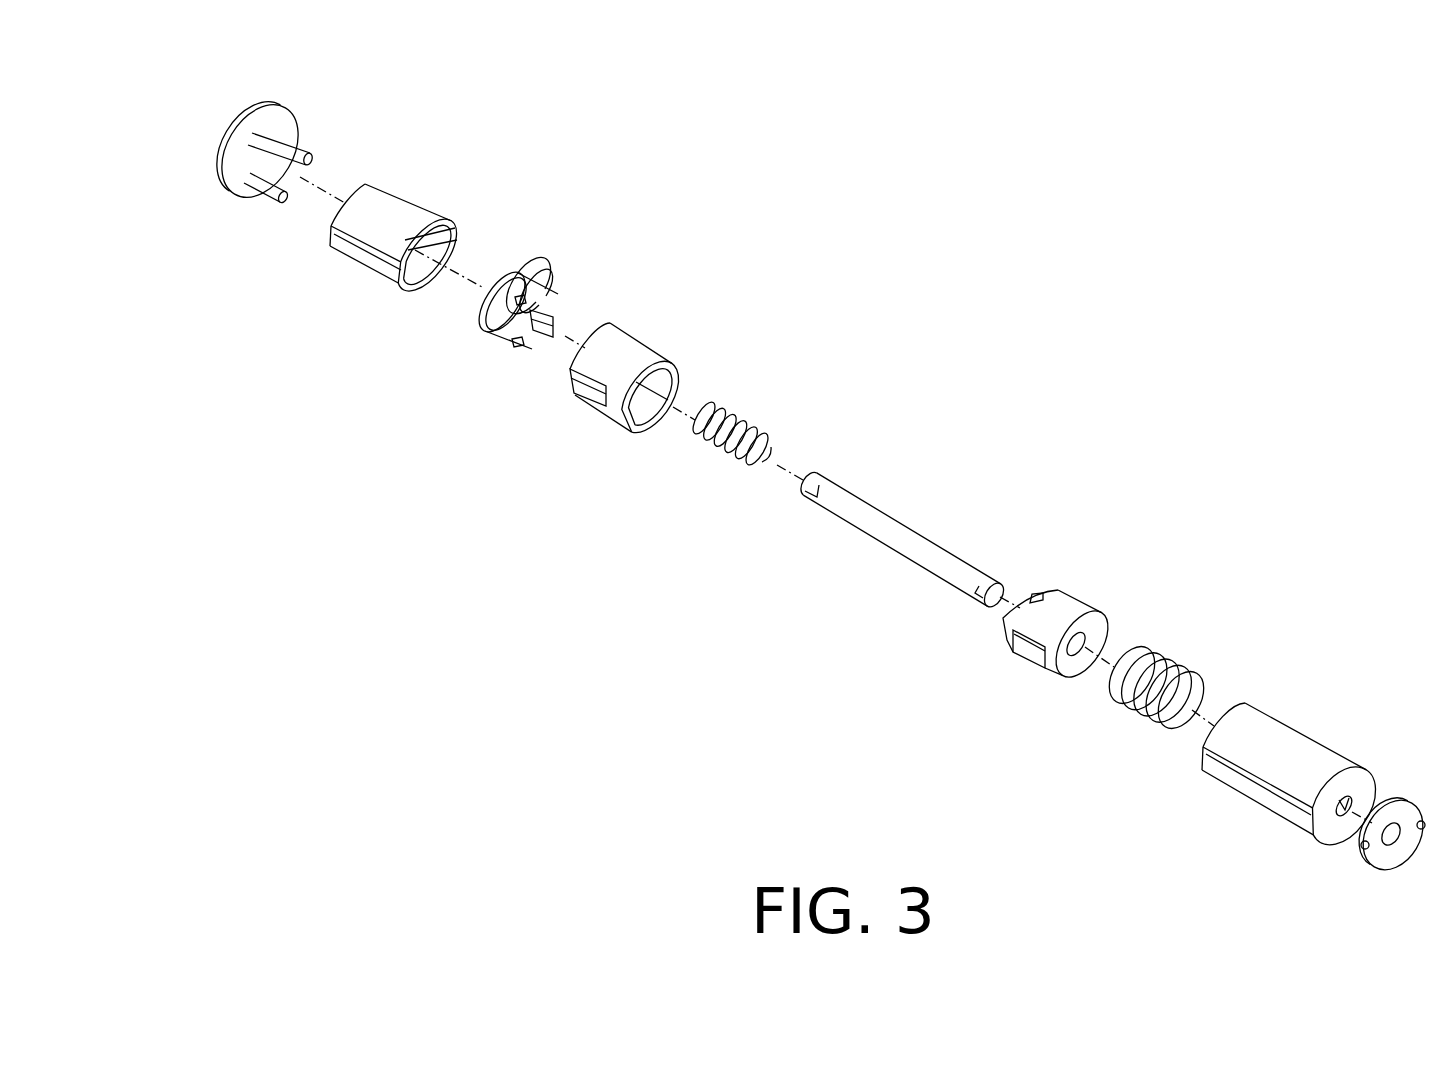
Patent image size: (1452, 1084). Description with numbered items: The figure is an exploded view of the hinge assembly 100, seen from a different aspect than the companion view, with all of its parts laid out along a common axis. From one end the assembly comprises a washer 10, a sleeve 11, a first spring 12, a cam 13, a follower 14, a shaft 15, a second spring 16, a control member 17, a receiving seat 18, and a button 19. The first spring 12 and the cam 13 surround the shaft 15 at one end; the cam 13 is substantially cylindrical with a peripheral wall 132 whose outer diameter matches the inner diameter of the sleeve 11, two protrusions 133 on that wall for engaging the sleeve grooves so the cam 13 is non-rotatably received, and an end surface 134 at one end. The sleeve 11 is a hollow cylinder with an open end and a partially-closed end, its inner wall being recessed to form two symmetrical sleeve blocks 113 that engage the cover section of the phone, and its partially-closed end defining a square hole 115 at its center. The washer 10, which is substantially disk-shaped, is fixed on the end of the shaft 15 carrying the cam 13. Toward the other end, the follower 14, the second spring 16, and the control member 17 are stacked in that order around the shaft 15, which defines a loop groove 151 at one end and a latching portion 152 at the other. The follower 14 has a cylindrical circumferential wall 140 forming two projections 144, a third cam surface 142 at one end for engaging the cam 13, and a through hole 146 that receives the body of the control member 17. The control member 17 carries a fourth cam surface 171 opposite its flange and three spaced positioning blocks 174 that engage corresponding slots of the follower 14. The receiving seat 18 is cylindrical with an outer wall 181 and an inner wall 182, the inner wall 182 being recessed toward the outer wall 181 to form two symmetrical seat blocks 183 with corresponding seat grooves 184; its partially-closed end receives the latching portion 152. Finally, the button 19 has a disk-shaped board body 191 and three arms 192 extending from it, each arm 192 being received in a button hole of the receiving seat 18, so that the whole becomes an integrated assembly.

The hinge assembly 100 is at (788, 489).
The button 19 is at (260, 133).
The board body 191 is at (235, 140).
The arms 192 is at (298, 147).
The receiving seat 18 is at (436, 248).
The outer wall 181 is at (373, 205).
The inner wall 182 is at (428, 288).
The seat blocks 183 is at (360, 253).
The seat grooves 184 is at (465, 240).
The control member 17 is at (543, 333).
The positioning blocks 174 is at (517, 300).
The fourth cam surface 171 is at (553, 348).
The follower 14 is at (662, 390).
The cylindrical circumferential wall 140 is at (650, 357).
The through hole 146 is at (663, 390).
The projections 144 is at (595, 388).
The third cam surface 142 is at (657, 425).
The second spring 16 is at (747, 430).
The shaft 15 is at (882, 565).
The latching portion 152 is at (802, 488).
The loop groove 151 is at (976, 598).
The cam 13 is at (1070, 638).
The peripheral wall 132 is at (1068, 600).
The protrusions 133 is at (1028, 655).
The end surface 134 is at (1065, 667).
The first spring 12 is at (1180, 667).
The sleeve 11 is at (1296, 790).
The sleeve blocks 113 is at (1253, 793).
The square hole 115 is at (1346, 818).
The washer 10 is at (1392, 852).